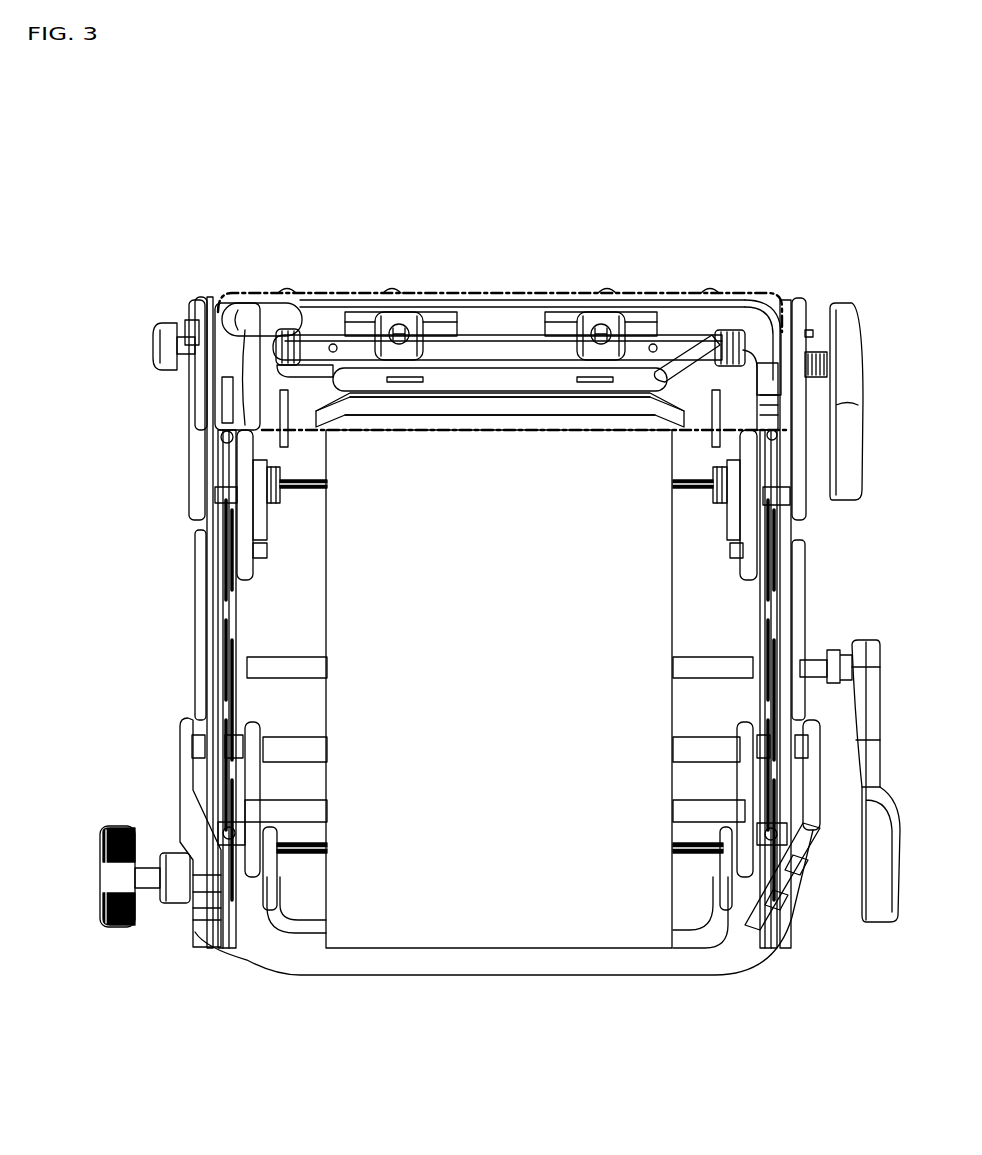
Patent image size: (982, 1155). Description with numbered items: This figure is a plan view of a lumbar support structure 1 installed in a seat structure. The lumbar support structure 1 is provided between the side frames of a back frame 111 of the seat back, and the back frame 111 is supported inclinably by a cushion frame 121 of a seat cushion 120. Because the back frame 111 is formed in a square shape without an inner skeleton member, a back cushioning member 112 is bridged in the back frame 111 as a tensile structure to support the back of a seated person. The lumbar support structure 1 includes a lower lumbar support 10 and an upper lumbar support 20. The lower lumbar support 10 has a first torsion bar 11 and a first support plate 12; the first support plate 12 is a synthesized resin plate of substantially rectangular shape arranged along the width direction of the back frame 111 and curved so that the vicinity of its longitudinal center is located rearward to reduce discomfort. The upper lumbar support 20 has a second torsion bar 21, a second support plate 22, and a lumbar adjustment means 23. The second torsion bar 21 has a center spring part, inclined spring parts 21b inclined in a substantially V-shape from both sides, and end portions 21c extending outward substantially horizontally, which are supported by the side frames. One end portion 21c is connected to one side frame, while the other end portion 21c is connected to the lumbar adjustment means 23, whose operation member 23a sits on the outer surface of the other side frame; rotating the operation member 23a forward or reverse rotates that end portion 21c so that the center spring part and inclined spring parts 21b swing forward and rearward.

The lumbar support structure 1 is at (538, 177).
The lower lumbar support 10 is at (548, 392).
The first torsion bar 11 is at (433, 405).
The first support plate 12 is at (493, 402).
The upper lumbar support 20 is at (527, 362).
The second torsion bar 21 is at (314, 360).
The inclined spring parts 21b is at (333, 370).
The end portions 21c is at (293, 344).
The second support plate 22 is at (487, 354).
The lumbar adjustment means 23 is at (188, 319).
The operation member 23a is at (153, 347).
The back frame 111 is at (250, 324).
The back cushioning member 112 is at (752, 281).
The seat cushion 120 is at (443, 920).
The cushion frame 121 is at (210, 700).